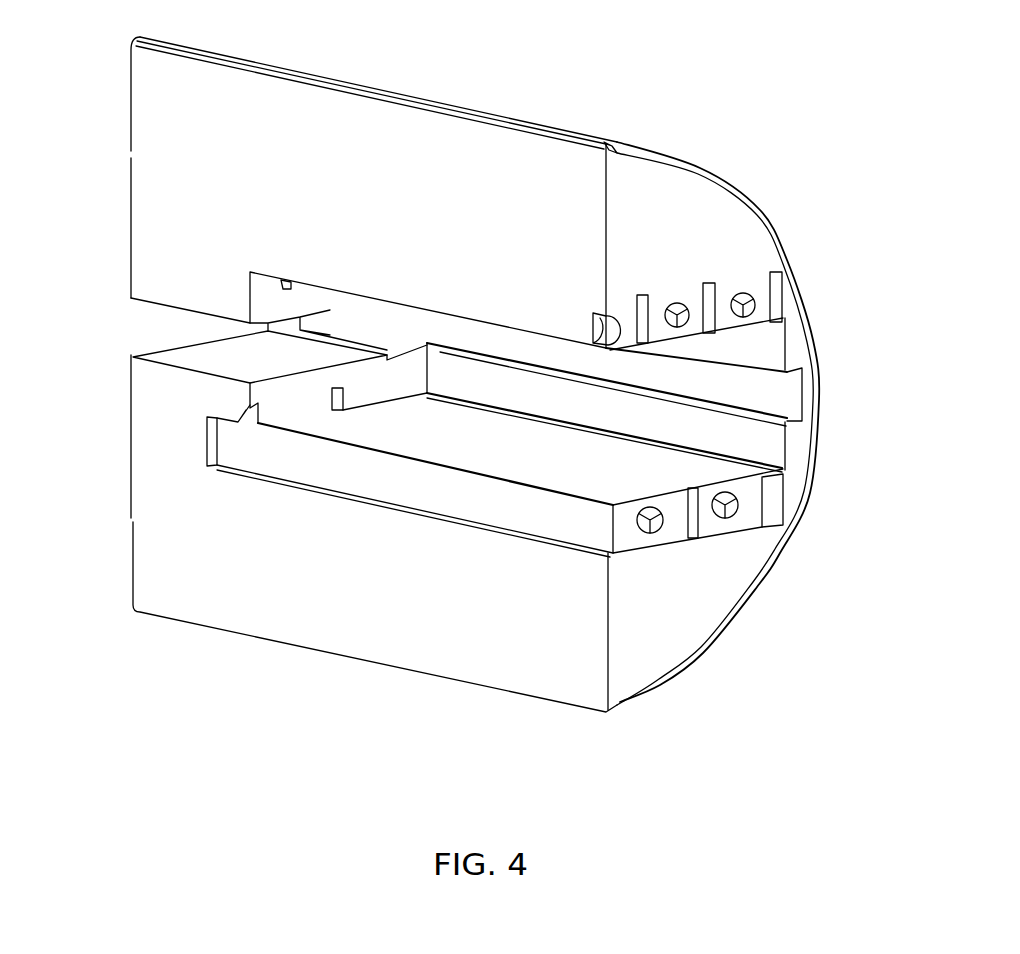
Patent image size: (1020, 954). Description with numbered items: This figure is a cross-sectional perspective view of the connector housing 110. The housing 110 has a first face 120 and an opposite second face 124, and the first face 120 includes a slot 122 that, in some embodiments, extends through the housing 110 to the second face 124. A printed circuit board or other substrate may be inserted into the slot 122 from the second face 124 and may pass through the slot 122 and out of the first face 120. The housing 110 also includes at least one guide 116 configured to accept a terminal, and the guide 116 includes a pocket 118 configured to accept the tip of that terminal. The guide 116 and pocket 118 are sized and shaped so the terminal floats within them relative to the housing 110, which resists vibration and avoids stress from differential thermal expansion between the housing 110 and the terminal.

The connector housing 110 is at (773, 63).
The guide 116 is at (413, 513).
The pocket 118 is at (227, 448).
The first face 120 is at (103, 185).
The slot 122 is at (783, 388).
The second face 124 is at (702, 600).